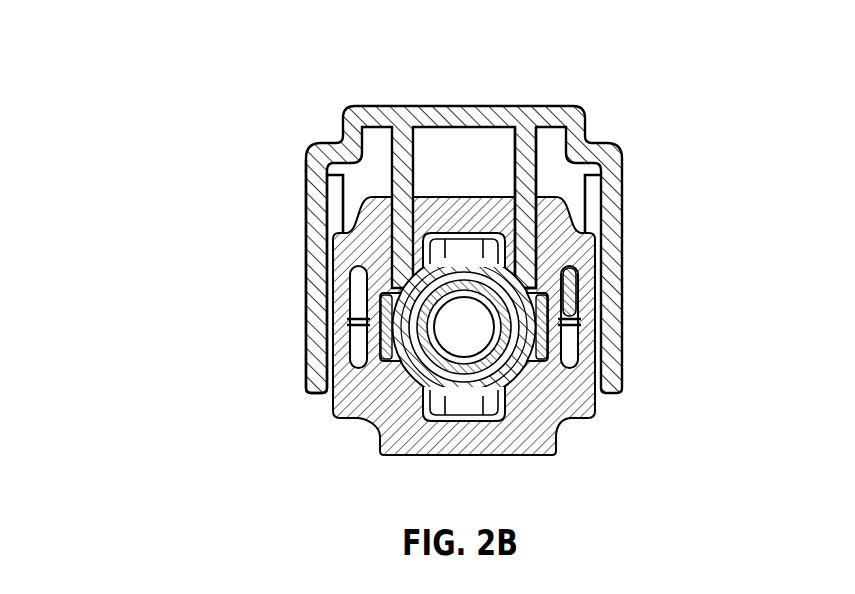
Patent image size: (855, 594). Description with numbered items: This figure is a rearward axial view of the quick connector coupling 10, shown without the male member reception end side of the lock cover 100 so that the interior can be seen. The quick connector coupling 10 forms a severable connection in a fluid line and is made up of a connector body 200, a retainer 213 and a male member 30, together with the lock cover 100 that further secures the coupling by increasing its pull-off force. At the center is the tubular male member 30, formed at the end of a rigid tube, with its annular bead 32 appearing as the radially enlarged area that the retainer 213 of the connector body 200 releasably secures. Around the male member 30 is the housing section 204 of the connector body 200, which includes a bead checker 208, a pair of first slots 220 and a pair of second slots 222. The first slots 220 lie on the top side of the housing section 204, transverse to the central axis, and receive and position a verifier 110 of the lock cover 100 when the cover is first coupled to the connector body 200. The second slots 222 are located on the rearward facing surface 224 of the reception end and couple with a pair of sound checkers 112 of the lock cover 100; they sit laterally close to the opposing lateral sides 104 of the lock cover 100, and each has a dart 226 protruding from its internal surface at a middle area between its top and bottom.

The quick connector coupling 10 is at (442, 289).
The lock cover 100 is at (427, 224).
The opposing lateral sides 104 is at (306, 298).
The verifier 110 is at (538, 155).
The sound checkers 112 is at (584, 268).
The connector body 200 is at (484, 294).
The housing section 204 is at (393, 430).
The bead checker 208 is at (378, 335).
The retainer 213 is at (458, 220).
The first slots 220 is at (558, 204).
The second slots 222 is at (587, 342).
The rearward facing surface 224 is at (347, 245).
The dart 226 is at (328, 350).
The male member 30 is at (488, 355).
The annular bead 32 is at (536, 327).